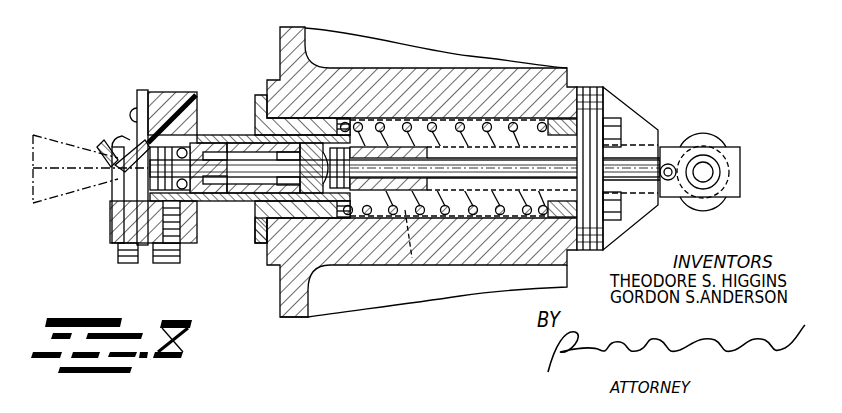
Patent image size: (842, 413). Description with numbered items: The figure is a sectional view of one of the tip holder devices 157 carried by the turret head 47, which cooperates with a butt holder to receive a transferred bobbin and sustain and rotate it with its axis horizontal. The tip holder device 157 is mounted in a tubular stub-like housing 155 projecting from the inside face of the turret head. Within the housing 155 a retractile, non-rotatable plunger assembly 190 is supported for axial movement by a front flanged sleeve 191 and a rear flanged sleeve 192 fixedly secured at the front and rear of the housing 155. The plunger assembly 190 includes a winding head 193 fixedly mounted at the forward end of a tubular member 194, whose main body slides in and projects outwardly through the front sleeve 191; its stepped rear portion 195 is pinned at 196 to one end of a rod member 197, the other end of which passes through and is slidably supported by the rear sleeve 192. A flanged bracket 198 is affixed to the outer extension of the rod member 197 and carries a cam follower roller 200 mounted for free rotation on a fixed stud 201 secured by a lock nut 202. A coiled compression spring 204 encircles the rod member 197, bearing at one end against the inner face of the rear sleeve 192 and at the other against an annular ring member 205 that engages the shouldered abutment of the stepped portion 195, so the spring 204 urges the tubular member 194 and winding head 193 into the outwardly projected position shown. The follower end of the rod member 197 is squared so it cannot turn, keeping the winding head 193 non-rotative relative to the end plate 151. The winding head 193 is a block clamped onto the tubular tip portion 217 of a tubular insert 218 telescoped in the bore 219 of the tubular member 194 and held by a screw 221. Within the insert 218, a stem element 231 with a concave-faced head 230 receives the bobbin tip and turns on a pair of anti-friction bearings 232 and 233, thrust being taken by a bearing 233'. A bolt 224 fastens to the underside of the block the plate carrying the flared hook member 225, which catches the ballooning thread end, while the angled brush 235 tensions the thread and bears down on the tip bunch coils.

The turret head 47 is at (266, 283).
The end plate 151 is at (303, 312).
The tubular stub-like housing 155 is at (412, 258).
The tip holder device 157 is at (211, 206).
The plunger assembly 190 is at (462, 193).
The front flanged sleeve 191 is at (222, 208).
The rear flanged sleeve 192 is at (575, 90).
The winding head 193 is at (165, 95).
The tubular member 194 is at (390, 207).
The stepped rear portion 195 is at (402, 130).
The pin 196 is at (412, 218).
The rod member 197 is at (517, 173).
The flanged bracket 198 is at (620, 118).
The cam follower roller 200 is at (717, 203).
The fixed stud 201 is at (703, 172).
The lock nut 202 is at (740, 153).
The coiled compression spring 204 is at (462, 122).
The annular ring member 205 is at (345, 125).
The tubular tip portion 217 is at (197, 130).
The tubular insert 218 is at (222, 205).
The bore 219 is at (332, 125).
The screw 221 is at (231, 133).
The bolt 224 is at (162, 255).
The hook member 225 is at (147, 173).
The stem head 230 is at (150, 178).
The stem element 231 is at (255, 245).
The anti-friction bearing 232 is at (212, 205).
The anti-friction bearing 233 is at (344, 219).
The thrust bearing 233' is at (108, 186).
The brush 235 is at (128, 147).